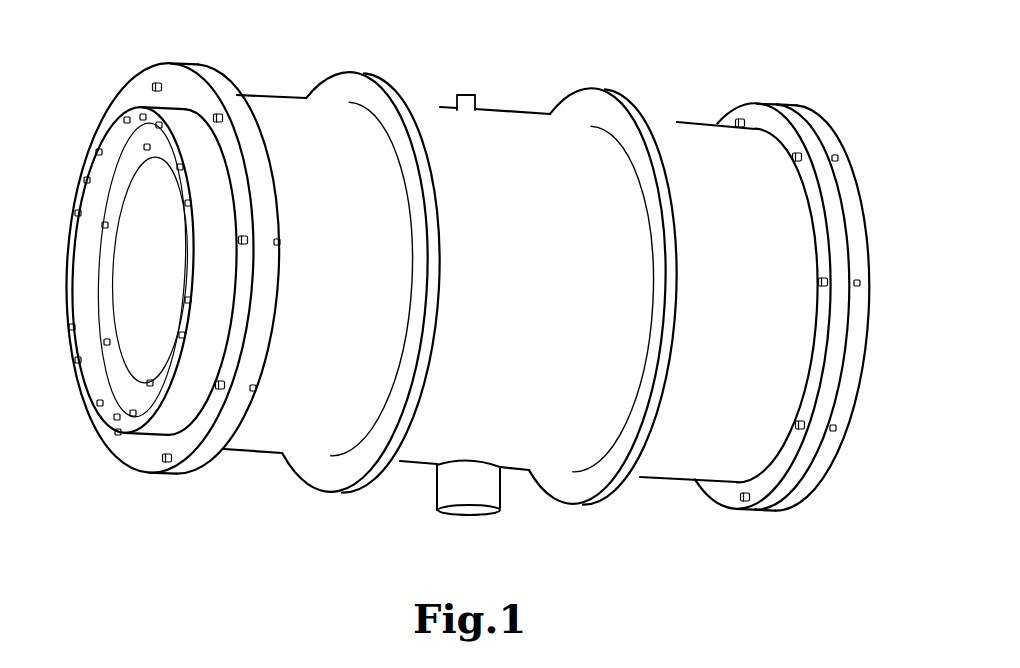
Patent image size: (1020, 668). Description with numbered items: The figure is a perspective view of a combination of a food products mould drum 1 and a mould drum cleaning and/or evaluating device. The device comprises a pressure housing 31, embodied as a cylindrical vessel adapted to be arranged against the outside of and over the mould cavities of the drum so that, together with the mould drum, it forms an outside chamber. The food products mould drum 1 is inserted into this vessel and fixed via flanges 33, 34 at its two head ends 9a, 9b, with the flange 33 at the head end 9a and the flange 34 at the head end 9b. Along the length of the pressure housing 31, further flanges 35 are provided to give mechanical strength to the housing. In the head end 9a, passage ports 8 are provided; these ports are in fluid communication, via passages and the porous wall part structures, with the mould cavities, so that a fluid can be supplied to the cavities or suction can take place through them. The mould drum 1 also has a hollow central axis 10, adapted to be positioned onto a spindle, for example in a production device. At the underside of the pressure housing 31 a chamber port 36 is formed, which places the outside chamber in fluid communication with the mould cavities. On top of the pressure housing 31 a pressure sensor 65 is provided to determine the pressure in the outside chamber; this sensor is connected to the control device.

The food products mould drum 1 is at (861, 316).
The passage ports 8 is at (147, 147).
The head end 9a is at (151, 270).
The head end 9b is at (858, 229).
The hollow central axis 10 is at (150, 270).
The pressure housing 31 is at (521, 288).
The flange 33 is at (182, 76).
The flange 34 is at (762, 112).
The flanges 35 is at (356, 84).
The chamber port 36 is at (483, 490).
The pressure sensor 65 is at (468, 94).